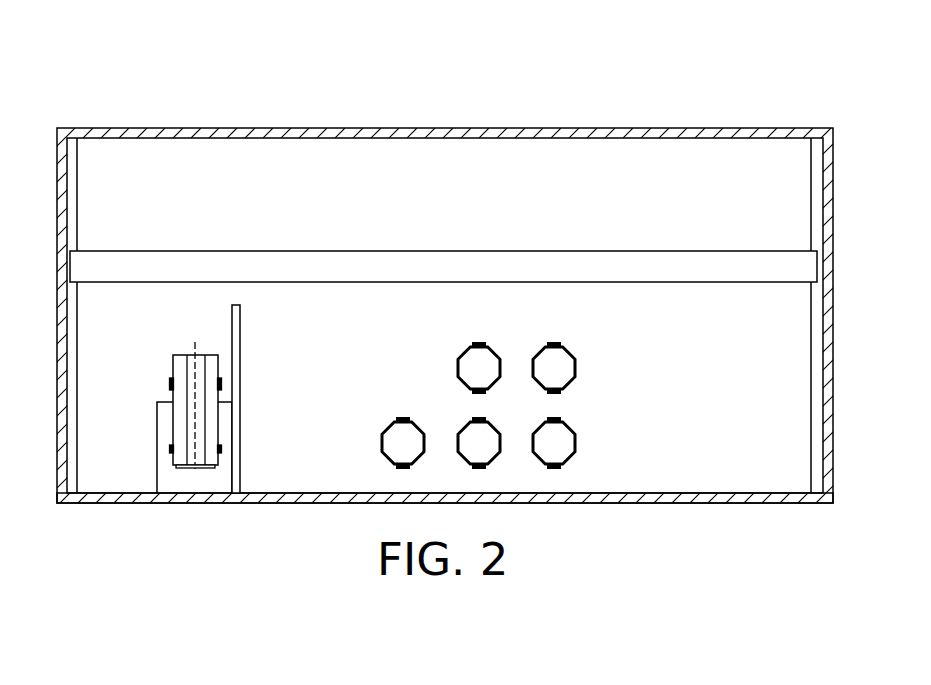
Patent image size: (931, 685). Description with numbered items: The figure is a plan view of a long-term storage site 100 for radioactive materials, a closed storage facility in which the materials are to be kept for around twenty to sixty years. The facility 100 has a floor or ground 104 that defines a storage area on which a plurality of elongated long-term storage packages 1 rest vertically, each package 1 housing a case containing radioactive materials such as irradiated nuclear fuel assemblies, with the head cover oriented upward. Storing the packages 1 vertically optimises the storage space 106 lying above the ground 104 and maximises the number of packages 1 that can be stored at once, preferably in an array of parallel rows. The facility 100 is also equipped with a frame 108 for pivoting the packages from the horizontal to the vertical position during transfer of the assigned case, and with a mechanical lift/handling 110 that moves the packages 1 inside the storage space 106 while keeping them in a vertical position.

The long-term storage site 100 is at (749, 106).
The floor or ground 104 is at (746, 467).
The storage space 106 is at (322, 356).
The frame for pivoting the packages 108 is at (246, 440).
The mechanical lift/handling 110 is at (560, 248).
The long-term storage package 1 is at (497, 348).